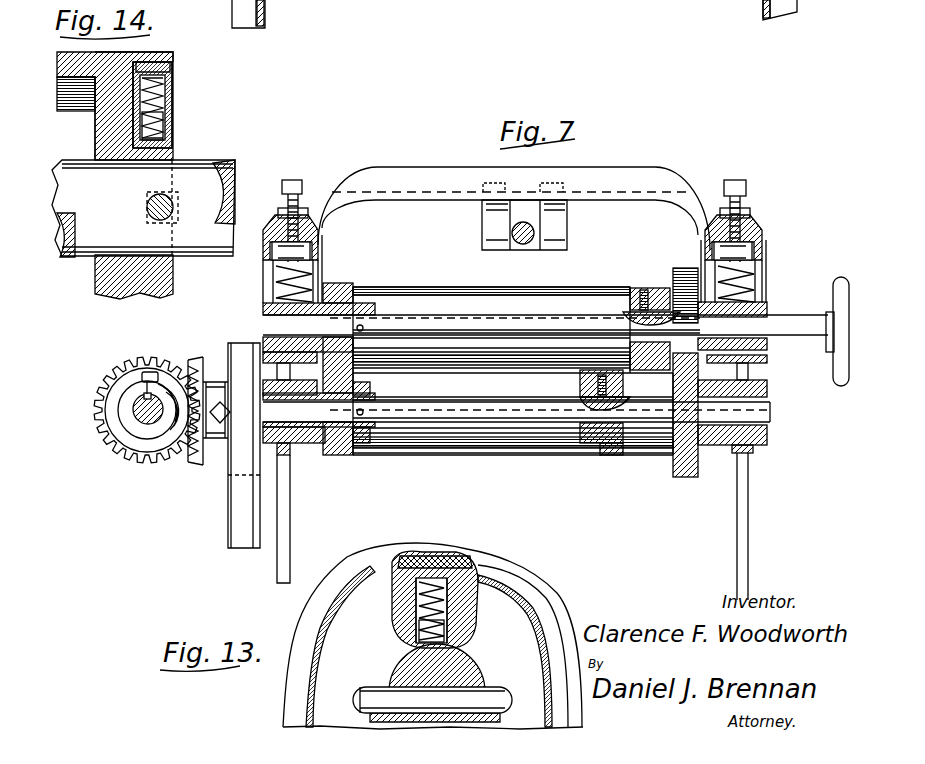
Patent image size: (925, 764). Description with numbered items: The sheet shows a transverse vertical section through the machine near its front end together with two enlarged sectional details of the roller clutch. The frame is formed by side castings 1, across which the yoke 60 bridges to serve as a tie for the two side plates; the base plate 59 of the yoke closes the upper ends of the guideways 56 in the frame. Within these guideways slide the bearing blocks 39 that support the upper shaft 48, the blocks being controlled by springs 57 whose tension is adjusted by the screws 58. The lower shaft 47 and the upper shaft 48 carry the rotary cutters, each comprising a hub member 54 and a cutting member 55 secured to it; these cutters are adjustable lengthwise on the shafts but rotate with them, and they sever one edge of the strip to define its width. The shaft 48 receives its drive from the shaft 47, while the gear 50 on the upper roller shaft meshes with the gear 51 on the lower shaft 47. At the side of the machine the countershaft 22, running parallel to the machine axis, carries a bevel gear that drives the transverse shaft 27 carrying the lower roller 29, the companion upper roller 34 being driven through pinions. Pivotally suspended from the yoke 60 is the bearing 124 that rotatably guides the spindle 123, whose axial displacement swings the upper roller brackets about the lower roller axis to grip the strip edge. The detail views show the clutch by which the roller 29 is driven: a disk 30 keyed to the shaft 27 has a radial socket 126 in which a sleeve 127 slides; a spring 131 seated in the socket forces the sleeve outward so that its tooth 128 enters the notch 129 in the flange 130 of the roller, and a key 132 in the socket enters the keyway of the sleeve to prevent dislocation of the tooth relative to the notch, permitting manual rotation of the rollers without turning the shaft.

In FIG. 14, the side castings 1 is at (265, 25).
In FIG. 7, the side castings 1 is at (283, 586).
In FIG. 7, the countershaft 22 is at (145, 418).
In FIG. 14, the shaft 27 is at (232, 181).
In FIG. 13, the shaft 27 is at (393, 668).
In FIG. 14, the lower roller 29 is at (90, 82).
In FIG. 7, the lower roller 29 is at (432, 458).
In FIG. 13, the lower roller 29 is at (532, 582).
In FIG. 14, the disk 30 is at (174, 152).
In FIG. 13, the disk 30 is at (352, 699).
In FIG. 7, the companion roller 34 is at (466, 289).
In FIG. 7, the blocks 39 is at (265, 311).
In FIG. 7, the lower shaft 47 is at (771, 412).
In FIG. 7, the shaft 48 is at (525, 320).
In FIG. 7, the gear 50 is at (688, 268).
In FIG. 7, the gear 51 is at (698, 470).
In FIG. 7, the hub members 54 is at (650, 292).
In FIG. 7, the cutting members 55 is at (628, 290).
In FIG. 7, the guideways 56 is at (265, 293).
In FIG. 7, the springs 57 is at (306, 279).
In FIG. 7, the screws 58 is at (283, 191).
In FIG. 7, the base plate 59 is at (320, 243).
In FIG. 7, the yoke 60 is at (660, 177).
In FIG. 7, the spindle 123 is at (537, 236).
In FIG. 7, the bearing 124 is at (522, 246).
In FIG. 14, the radial socket 126 is at (172, 125).
In FIG. 13, the radial socket 126 is at (397, 632).
In FIG. 14, the sleeve 127 is at (165, 95).
In FIG. 13, the sleeve 127 is at (447, 590).
In FIG. 14, the tooth 128 is at (172, 78).
In FIG. 13, the tooth 128 is at (412, 560).
In FIG. 14, the notch 129 is at (170, 70).
In FIG. 13, the notch 129 is at (422, 566).
In FIG. 14, the flange 130 is at (173, 56).
In FIG. 13, the flange 130 is at (392, 611).
In FIG. 14, the spring 131 is at (162, 112).
In FIG. 13, the key 132 is at (446, 605).